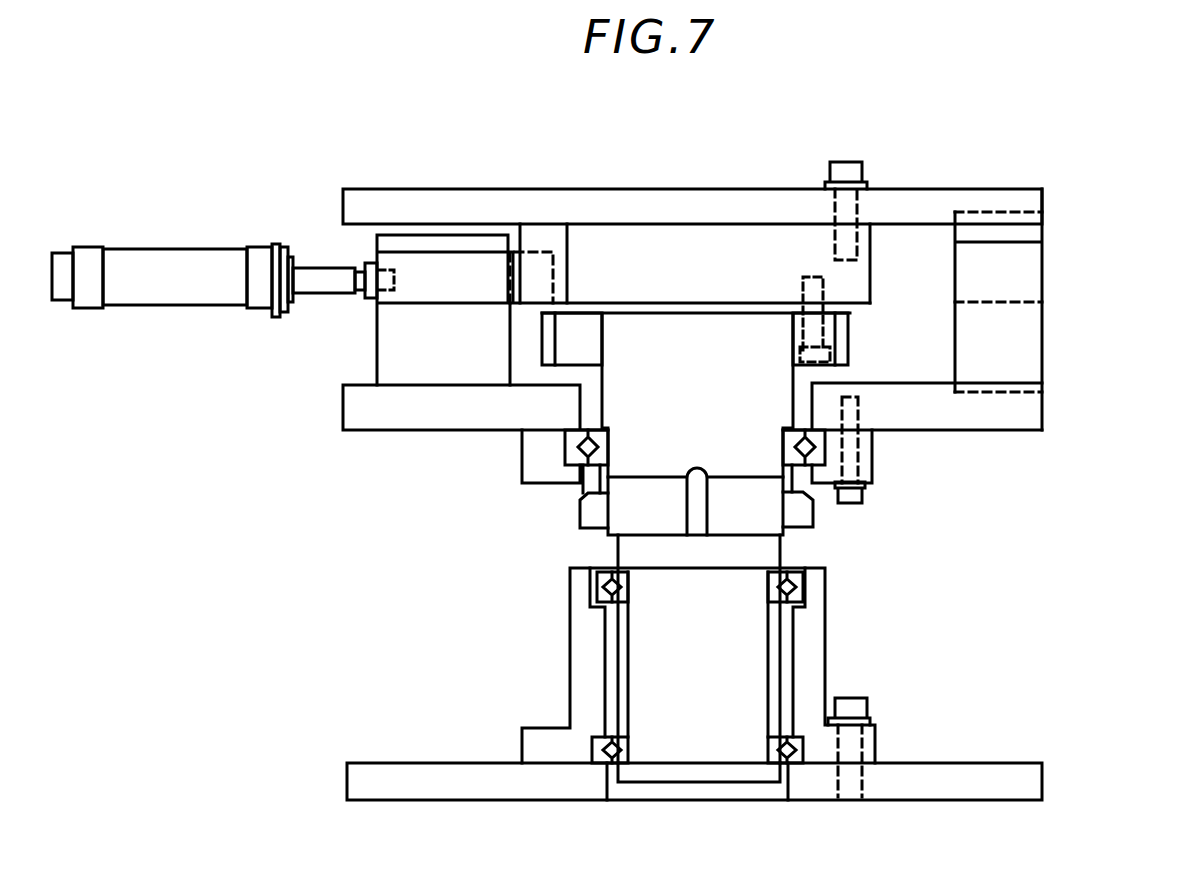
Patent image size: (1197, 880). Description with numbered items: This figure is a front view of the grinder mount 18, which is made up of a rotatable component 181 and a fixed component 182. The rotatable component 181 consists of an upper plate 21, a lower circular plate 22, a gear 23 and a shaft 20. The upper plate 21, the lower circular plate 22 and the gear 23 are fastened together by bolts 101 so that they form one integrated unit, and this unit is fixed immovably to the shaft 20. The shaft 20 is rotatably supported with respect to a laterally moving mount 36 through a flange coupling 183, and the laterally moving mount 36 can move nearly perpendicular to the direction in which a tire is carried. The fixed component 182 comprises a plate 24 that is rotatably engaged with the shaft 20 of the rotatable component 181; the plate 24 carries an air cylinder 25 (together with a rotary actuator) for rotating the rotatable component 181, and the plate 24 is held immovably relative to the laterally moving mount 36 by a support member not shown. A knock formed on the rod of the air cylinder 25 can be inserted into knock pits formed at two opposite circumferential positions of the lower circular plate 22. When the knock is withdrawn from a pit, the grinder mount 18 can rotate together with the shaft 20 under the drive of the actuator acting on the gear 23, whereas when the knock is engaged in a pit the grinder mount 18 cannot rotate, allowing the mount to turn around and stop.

The grinder mount 18 is at (1082, 210).
The rotatable component 181 is at (419, 171).
The fixed component 182 is at (927, 462).
The flange coupling 183 is at (812, 655).
The shaft 20 is at (765, 552).
The upper plate 21 is at (510, 190).
The lower circular plate 22 is at (688, 250).
The gear 23 is at (575, 355).
The plate 24 is at (1028, 408).
The air cylinder 25 is at (180, 255).
The laterally moving mount 36 is at (422, 778).
The bolts 101 is at (820, 332).